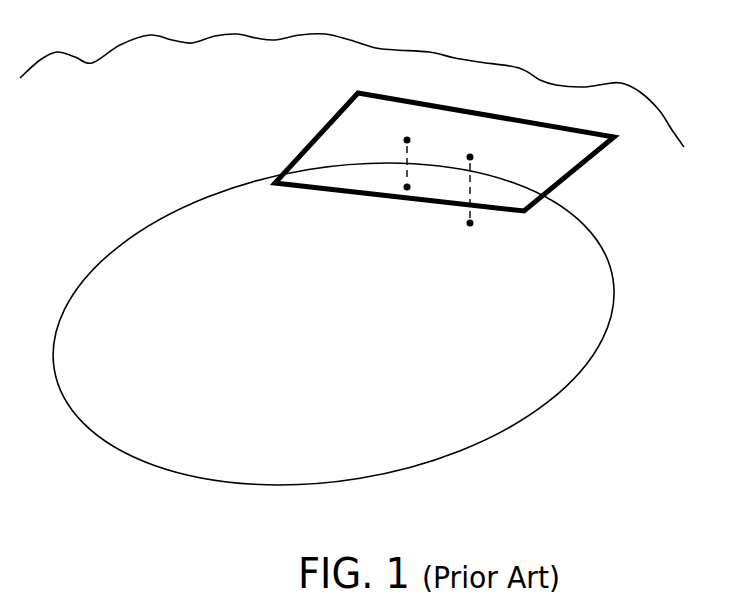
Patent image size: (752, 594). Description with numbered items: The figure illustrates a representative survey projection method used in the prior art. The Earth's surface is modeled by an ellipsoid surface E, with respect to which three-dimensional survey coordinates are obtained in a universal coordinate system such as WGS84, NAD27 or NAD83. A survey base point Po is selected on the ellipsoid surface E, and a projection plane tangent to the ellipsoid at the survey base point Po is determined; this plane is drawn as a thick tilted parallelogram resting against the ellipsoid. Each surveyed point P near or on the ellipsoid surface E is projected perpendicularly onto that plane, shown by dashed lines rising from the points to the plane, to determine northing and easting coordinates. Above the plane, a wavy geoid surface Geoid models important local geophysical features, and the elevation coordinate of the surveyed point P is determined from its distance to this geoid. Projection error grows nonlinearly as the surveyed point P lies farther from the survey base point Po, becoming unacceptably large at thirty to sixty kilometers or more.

The geoid surface Geoid is at (527, 68).
The ellipsoid surface E is at (611, 268).
The survey base point Po is at (423, 185).
The surveyed point P is at (481, 223).